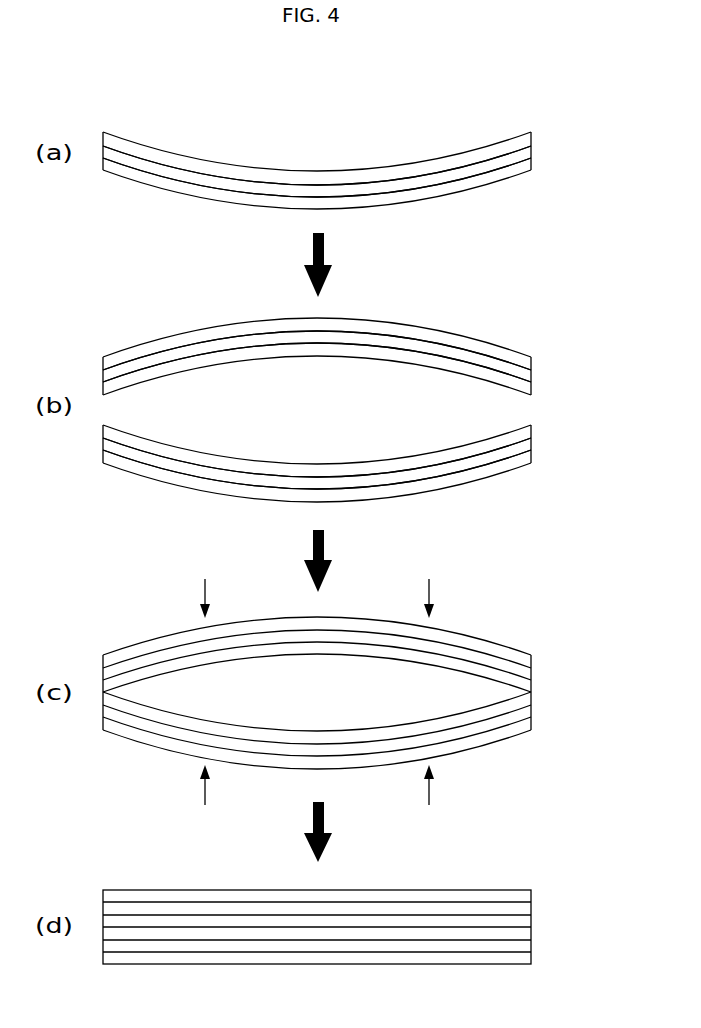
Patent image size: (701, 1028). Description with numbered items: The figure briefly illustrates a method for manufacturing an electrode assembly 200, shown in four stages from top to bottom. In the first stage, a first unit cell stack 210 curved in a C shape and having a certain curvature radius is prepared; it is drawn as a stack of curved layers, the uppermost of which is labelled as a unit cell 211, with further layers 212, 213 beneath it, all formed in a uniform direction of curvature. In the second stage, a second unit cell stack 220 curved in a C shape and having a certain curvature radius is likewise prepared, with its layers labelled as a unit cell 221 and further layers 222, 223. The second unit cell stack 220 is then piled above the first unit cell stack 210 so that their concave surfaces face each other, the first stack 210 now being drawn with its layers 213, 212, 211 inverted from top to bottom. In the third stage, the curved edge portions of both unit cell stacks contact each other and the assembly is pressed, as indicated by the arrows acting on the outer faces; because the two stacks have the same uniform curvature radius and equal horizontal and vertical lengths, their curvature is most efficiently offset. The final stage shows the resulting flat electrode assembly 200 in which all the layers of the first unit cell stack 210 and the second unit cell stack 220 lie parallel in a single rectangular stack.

The electrode assembly 200 is at (454, 873).
The first unit cell stack 210 is at (342, 304).
The unit cell 211 is at (531, 139).
The second layer of first laminate 212 is at (531, 152).
The third layer of first laminate 213 is at (531, 164).
The second unit cell stack 220 is at (342, 343).
The unit cell 221 is at (531, 363).
The second layer of second laminate 222 is at (531, 376).
The third layer of second laminate 223 is at (531, 388).